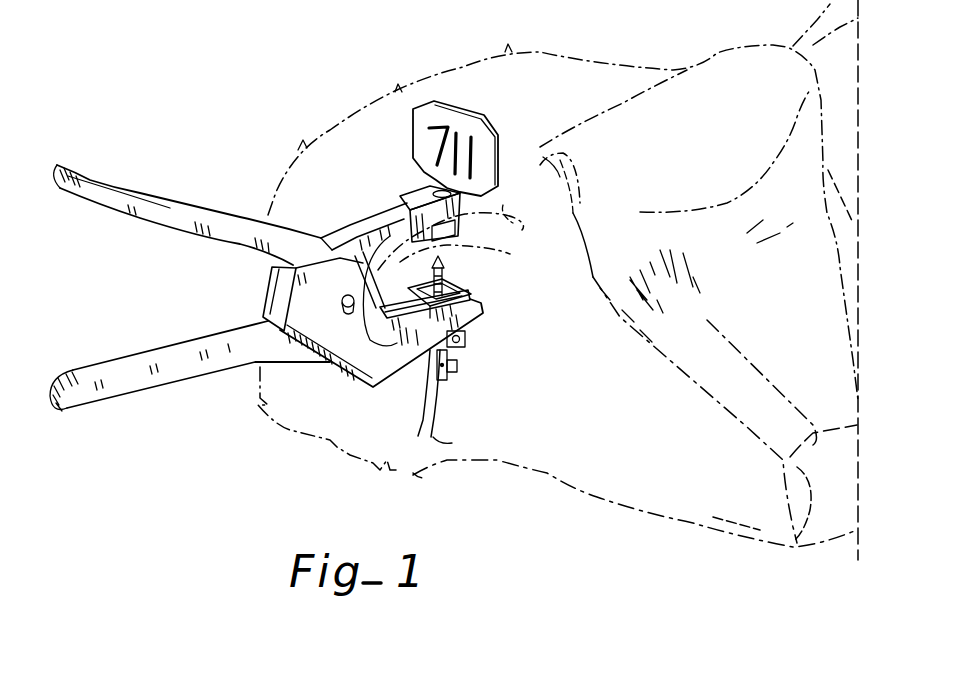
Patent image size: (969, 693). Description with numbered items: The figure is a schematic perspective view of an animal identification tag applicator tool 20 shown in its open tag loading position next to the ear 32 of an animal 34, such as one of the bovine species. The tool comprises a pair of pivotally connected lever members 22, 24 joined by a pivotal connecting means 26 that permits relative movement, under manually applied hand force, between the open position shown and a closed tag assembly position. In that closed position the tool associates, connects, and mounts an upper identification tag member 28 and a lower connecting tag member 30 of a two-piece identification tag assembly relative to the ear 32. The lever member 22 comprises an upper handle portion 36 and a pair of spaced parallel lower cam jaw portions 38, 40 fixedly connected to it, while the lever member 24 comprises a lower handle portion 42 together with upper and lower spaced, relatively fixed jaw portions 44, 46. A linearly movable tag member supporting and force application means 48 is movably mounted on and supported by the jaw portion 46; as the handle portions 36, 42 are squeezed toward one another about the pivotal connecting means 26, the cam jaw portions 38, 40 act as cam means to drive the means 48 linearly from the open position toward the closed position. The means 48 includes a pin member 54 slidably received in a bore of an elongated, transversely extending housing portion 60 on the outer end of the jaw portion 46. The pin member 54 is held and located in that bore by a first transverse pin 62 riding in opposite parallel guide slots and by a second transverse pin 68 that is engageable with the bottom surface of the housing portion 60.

The animal identification tag applicator tool 20 is at (208, 279).
The lever member 22 is at (330, 223).
The lever member 24 is at (297, 368).
The pivotal connecting means 26 is at (342, 302).
The upper identification tag member 28 is at (498, 117).
The lower connecting tag member 30 is at (455, 262).
The ear 32 is at (546, 200).
The animal 34 is at (722, 80).
The upper handle portion 36 is at (162, 203).
The lower cam jaw portion 38 is at (270, 291).
The lower cam jaw portion 40 is at (394, 377).
The lower handle portion 42 is at (150, 382).
The upper jaw portion 44 is at (410, 199).
The lower jaw portion 46 is at (467, 343).
The tag member supporting and force application means 48 is at (485, 302).
The pin member 54 is at (433, 437).
The housing portion 60 is at (424, 430).
The first transverse pin 62 is at (457, 367).
The second transverse pin 68 is at (447, 372).